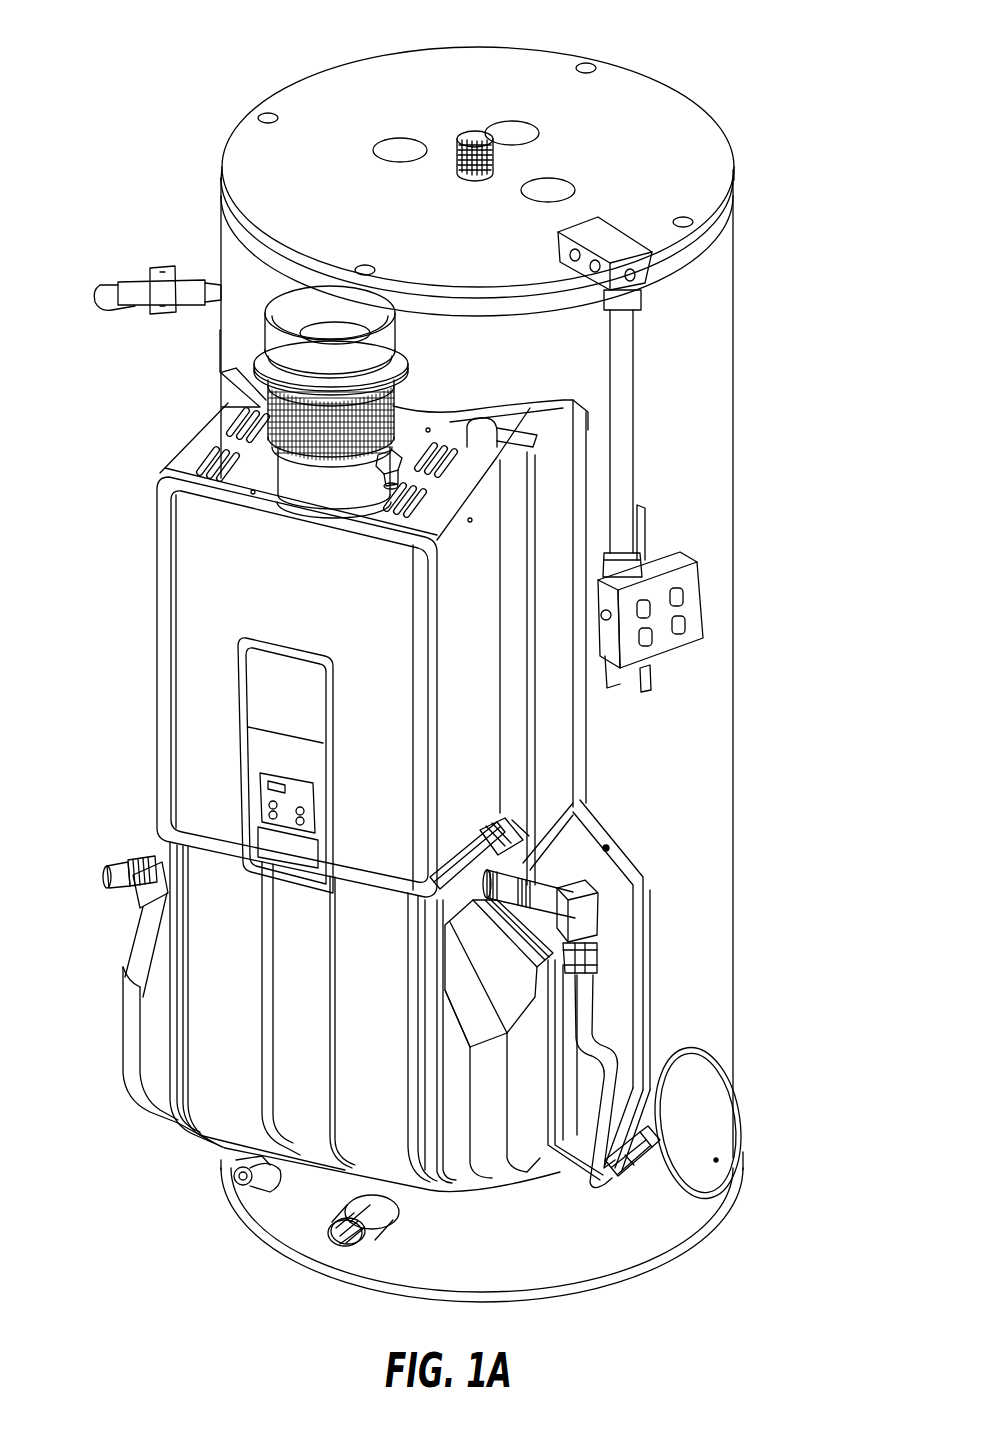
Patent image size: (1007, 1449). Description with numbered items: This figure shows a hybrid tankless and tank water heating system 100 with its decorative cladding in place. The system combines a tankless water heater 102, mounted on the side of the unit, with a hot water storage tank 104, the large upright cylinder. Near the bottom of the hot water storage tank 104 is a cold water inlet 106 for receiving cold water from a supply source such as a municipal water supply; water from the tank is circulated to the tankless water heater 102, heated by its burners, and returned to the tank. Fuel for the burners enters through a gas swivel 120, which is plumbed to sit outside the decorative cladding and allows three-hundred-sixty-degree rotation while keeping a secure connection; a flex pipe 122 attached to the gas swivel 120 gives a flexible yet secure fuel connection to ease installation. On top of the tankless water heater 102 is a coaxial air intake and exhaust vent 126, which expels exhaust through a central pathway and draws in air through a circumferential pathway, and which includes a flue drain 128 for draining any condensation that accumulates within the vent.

The hybrid tankless and tank water heating system 100 is at (747, 108).
The tankless water heater 102 is at (160, 556).
The hot water storage tank 104 is at (722, 328).
The cold water inlet 106 is at (350, 1248).
The gas swivel 120 is at (595, 937).
The flex pipe 122 is at (628, 1058).
The coaxial air intake and exhaust vent 126 is at (293, 455).
The flue drain 128 is at (390, 462).